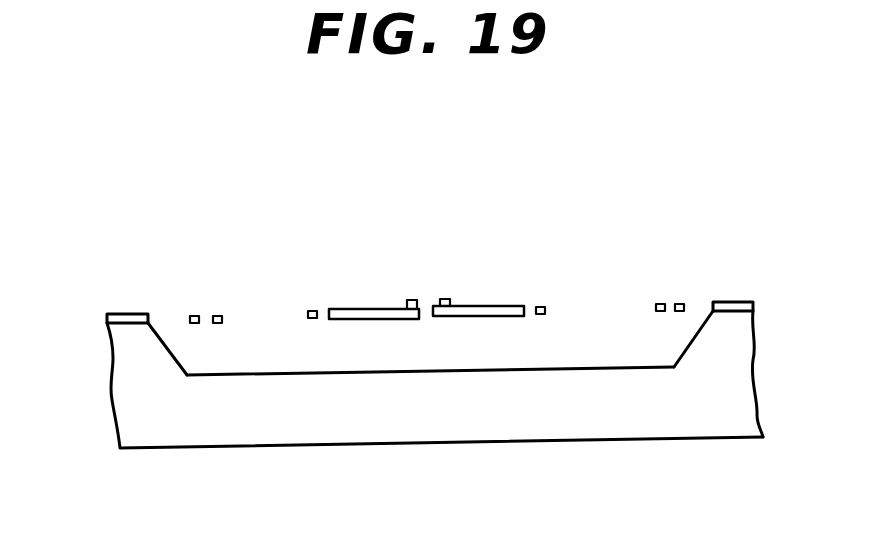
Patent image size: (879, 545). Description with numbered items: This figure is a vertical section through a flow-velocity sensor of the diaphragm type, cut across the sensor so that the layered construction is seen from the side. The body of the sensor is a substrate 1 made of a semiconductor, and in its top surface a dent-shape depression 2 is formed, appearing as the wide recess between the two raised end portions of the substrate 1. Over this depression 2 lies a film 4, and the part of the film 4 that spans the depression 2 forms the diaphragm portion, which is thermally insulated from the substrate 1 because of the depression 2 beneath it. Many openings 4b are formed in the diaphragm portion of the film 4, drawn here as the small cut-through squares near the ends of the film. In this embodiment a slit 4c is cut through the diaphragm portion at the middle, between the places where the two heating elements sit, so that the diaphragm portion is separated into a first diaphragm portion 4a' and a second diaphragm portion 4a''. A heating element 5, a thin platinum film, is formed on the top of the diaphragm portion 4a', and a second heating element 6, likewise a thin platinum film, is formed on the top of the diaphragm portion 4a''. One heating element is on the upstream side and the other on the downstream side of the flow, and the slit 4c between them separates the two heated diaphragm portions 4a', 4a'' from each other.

The substrate 1 is at (131, 340).
The depression 2 is at (218, 374).
The film 4 is at (385, 308).
The diaphragm portion 4a' is at (348, 416).
The diaphragm portion 4a'' is at (533, 415).
The openings 4b is at (627, 302).
The slit 4c is at (428, 312).
The heating element 5 is at (413, 300).
The heating element 6 is at (445, 299).